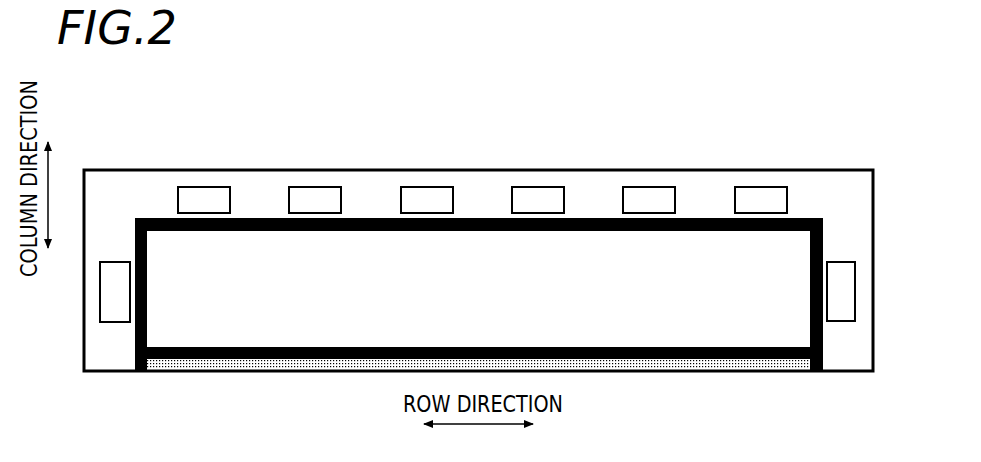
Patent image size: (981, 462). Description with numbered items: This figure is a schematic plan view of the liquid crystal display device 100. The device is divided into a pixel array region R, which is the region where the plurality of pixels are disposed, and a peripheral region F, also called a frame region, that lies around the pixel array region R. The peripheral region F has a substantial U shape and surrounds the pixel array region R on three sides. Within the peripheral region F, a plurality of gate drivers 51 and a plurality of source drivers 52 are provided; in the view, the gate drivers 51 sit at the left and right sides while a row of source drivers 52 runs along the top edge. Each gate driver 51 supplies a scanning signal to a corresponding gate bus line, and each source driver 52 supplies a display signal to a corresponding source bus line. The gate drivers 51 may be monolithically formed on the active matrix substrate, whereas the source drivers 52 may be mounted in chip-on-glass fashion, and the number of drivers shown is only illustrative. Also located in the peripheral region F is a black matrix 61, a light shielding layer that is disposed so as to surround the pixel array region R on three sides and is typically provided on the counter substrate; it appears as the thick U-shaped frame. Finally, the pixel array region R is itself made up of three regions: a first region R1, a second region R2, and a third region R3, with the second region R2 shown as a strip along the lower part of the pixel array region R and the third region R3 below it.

The liquid crystal display device 100 is at (888, 152).
The peripheral region F is at (118, 208).
The black matrix 61 is at (160, 217).
The pixel array region R is at (486, 266).
The first region R1 is at (790, 249).
The second region R2 is at (812, 358).
The third region R3 is at (783, 370).
The source driver 52 is at (208, 187).
The gate driver 51 is at (100, 291).